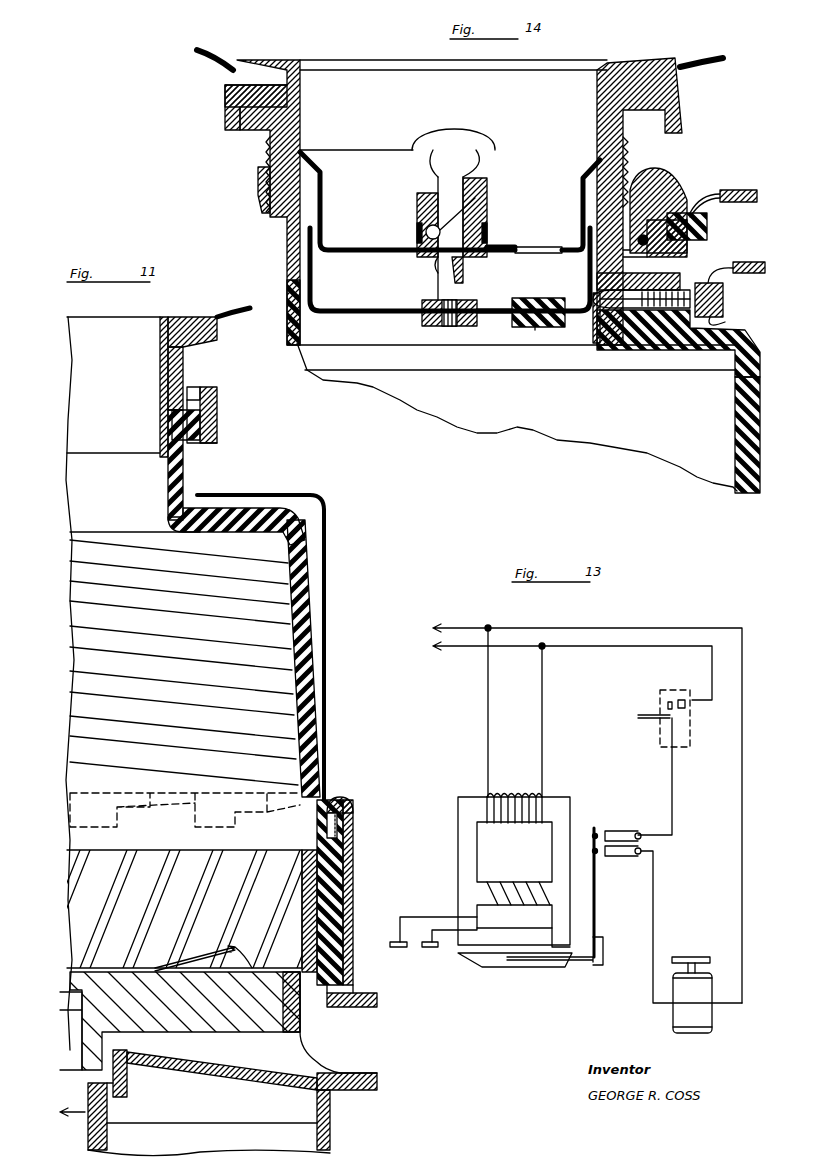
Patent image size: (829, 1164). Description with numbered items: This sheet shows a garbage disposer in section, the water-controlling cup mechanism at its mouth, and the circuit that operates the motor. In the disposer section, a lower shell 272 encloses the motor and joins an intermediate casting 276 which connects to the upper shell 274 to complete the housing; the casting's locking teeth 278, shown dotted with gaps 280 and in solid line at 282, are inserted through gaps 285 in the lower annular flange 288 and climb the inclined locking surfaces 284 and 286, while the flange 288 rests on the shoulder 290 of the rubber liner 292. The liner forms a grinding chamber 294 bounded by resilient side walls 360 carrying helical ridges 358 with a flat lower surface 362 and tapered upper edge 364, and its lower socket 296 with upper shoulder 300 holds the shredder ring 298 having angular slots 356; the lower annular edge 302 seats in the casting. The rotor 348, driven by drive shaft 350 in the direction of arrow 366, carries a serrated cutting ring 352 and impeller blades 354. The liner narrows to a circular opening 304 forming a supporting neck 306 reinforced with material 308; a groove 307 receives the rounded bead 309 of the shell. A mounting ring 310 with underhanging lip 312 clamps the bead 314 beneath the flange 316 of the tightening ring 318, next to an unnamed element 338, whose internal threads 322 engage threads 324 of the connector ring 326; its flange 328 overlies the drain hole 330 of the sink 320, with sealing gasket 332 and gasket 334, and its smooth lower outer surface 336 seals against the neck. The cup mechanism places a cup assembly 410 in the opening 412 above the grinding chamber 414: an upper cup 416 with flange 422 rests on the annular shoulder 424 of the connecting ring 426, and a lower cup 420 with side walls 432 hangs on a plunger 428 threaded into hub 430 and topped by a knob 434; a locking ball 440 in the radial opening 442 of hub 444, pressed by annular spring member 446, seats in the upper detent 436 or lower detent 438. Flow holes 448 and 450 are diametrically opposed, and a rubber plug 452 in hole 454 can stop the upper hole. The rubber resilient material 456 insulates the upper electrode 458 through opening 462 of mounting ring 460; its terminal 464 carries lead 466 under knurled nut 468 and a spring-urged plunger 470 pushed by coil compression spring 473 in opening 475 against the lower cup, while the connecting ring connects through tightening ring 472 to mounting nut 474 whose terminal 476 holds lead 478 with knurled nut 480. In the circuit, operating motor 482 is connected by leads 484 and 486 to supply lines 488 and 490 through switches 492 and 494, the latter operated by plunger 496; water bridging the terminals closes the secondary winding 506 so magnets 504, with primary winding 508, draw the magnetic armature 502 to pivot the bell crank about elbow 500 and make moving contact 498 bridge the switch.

In FIG. 14, the opening 412 is at (343, 78).
In FIG. 14, the connecting ring 426 is at (300, 60).
In FIG. 14, the tightening ring 472 is at (225, 112).
In FIG. 14, the flange 422 is at (582, 170).
In FIG. 14, the hole 450 is at (537, 247).
In FIG. 14, the upper cup 416 is at (495, 250).
In FIG. 14, the knob 434 is at (437, 130).
In FIG. 14, the cup assembly 410 is at (487, 131).
In FIG. 14, the hub 444 is at (420, 196).
In FIG. 14, the upper detent 436 is at (480, 198).
In FIG. 14, the locking ball 440 is at (420, 228).
In FIG. 14, the annular spring member 446 is at (487, 228).
In FIG. 14, the radial opening 442 is at (417, 232).
In FIG. 14, the lower detent 438 is at (437, 270).
In FIG. 14, the plunger 428 is at (458, 277).
In FIG. 14, the hub 430 is at (425, 322).
In FIG. 14, the hole 448 is at (345, 308).
In FIG. 14, the side walls 432 is at (587, 264).
In FIG. 14, the lower cup 420 is at (490, 315).
In FIG. 14, the hole 454 is at (545, 327).
In FIG. 14, the rubber plug 452 is at (535, 328).
In FIG. 14, the plunger 470 is at (600, 350).
In FIG. 14, the annular shoulder 424 is at (600, 140).
In FIG. 14, the mounting nut 474 is at (660, 182).
In FIG. 14, the terminal 476 is at (648, 236).
In FIG. 13, the terminal 476 is at (400, 948).
In FIG. 14, the knurled nut 480 is at (707, 225).
In FIG. 14, the lead 478 is at (740, 190).
In FIG. 14, the mounting ring 460 is at (687, 251).
In FIG. 14, the opening 475 is at (680, 282).
In FIG. 14, the terminal 464 is at (700, 299).
In FIG. 13, the terminal 464 is at (430, 948).
In FIG. 14, the knurled nut 468 is at (723, 292).
In FIG. 14, the upper electrode 458 is at (723, 316).
In FIG. 14, the lead 466 is at (757, 263).
In FIG. 14, the rubber resilient material 456 is at (750, 352).
In FIG. 14, the grinding chamber 414 is at (740, 412).
In FIG. 14, the opening 462 is at (640, 350).
In FIG. 14, the coil compression spring 473 is at (677, 350).
In FIG. 11, the circular opening 304 is at (85, 473).
In FIG. 11, the drain hole 330 is at (160, 325).
In FIG. 11, the sink 320 is at (245, 310).
In FIG. 11, the connector ring 326 is at (167, 317).
In FIG. 11, the flange 328 is at (195, 317).
In FIG. 11, the sealing gasket 332 is at (211, 322).
In FIG. 11, the gasket 334 is at (215, 340).
In FIG. 11, the tightening ring 318 is at (160, 352).
In FIG. 11, the threads 324 is at (160, 372).
In FIG. 11, the internal threads 322 is at (167, 392).
In FIG. 11, the lower outer surface 336 is at (160, 437).
In FIG. 11, the supporting neck 306 is at (184, 466).
In FIG. 11, the reinforcing material 308 is at (185, 485).
In FIG. 11, the rounded bead 309 is at (172, 511).
In FIG. 11, the groove 307 is at (230, 494).
In FIG. 11, the mounting ring 310 is at (217, 404).
In FIG. 11, the flange 316 is at (200, 392).
In FIG. 11, the block 338 is at (192, 387).
In FIG. 11, the bead 314 is at (200, 420).
In FIG. 11, the underhanging lip 312 is at (217, 446).
In FIG. 11, the ridges 358 is at (85, 622).
In FIG. 11, the lower surface 362 is at (88, 656).
In FIG. 11, the tapered upper edge 364 is at (90, 684).
In FIG. 11, the grinding chamber 294 is at (305, 682).
In FIG. 11, the side walls 360 is at (308, 632).
In FIG. 11, the upper shell 274 is at (327, 758).
In FIG. 11, the locking teeth 278 is at (240, 795).
In FIG. 11, the gaps 280 is at (166, 795).
In FIG. 11, the inclined locking surface 284 is at (205, 795).
In FIG. 11, the gaps 285 is at (87, 805).
In FIG. 11, the shredder ring 298 is at (76, 856).
In FIG. 11, the angular slots 356 is at (103, 900).
In FIG. 11, the impeller blades 354 is at (235, 947).
In FIG. 11, the upper shoulder 300 is at (312, 860).
In FIG. 11, the lower annular flange 288 is at (343, 845).
In FIG. 11, the rubber liner 292 is at (352, 900).
In FIG. 11, the socket 296 is at (332, 885).
In FIG. 11, the locking teeth 282 is at (353, 801).
In FIG. 11, the inclined locking surface 286 is at (338, 816).
In FIG. 11, the shoulder 290 is at (338, 829).
In FIG. 11, the lower annular edge 302 is at (345, 977).
In FIG. 11, the intermediate casting 276 is at (355, 996).
In FIG. 11, the rotor 348 is at (250, 1024).
In FIG. 11, the serrated cutting ring 352 is at (292, 1028).
In FIG. 11, the drive shaft 350 is at (83, 1077).
In FIG. 11, the lower shell 272 is at (332, 1130).
In FIG. 11, the arrow 366 is at (60, 1114).
In FIG. 13, the electrical supply line 488 is at (436, 627).
In FIG. 13, the electrical supply line 490 is at (437, 647).
In FIG. 13, the switch 494 is at (683, 700).
In FIG. 13, the plunger 496 is at (655, 713).
In FIG. 13, the primary winding 508 is at (510, 797).
In FIG. 13, the secondary winding 506 is at (520, 882).
In FIG. 13, the magnets 504 is at (534, 945).
In FIG. 13, the switch 492 is at (610, 830).
In FIG. 13, the moving contact 498 is at (598, 888).
In FIG. 13, the elbow 500 is at (600, 965).
In FIG. 13, the magnetic armature 502 is at (525, 967).
In FIG. 13, the lead 484 is at (655, 925).
In FIG. 13, the lead 486 is at (742, 877).
In FIG. 13, the operating motor 482 is at (705, 978).